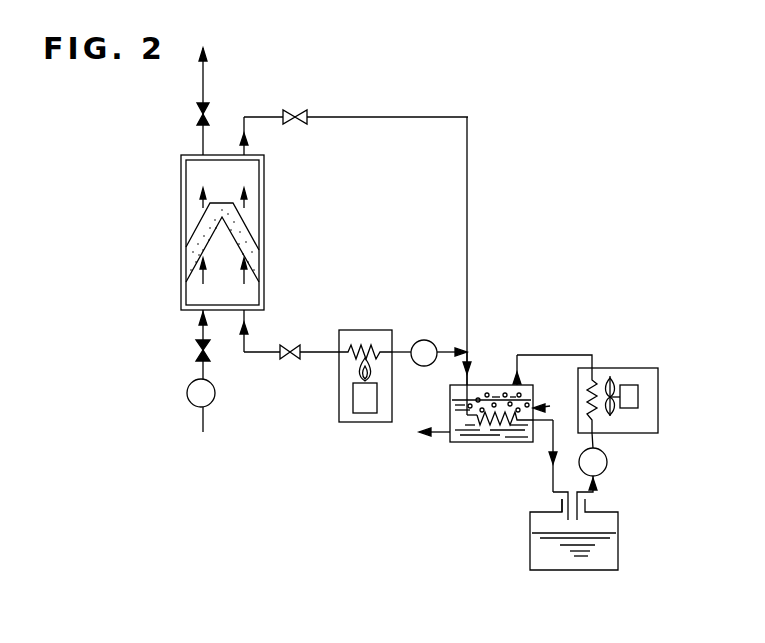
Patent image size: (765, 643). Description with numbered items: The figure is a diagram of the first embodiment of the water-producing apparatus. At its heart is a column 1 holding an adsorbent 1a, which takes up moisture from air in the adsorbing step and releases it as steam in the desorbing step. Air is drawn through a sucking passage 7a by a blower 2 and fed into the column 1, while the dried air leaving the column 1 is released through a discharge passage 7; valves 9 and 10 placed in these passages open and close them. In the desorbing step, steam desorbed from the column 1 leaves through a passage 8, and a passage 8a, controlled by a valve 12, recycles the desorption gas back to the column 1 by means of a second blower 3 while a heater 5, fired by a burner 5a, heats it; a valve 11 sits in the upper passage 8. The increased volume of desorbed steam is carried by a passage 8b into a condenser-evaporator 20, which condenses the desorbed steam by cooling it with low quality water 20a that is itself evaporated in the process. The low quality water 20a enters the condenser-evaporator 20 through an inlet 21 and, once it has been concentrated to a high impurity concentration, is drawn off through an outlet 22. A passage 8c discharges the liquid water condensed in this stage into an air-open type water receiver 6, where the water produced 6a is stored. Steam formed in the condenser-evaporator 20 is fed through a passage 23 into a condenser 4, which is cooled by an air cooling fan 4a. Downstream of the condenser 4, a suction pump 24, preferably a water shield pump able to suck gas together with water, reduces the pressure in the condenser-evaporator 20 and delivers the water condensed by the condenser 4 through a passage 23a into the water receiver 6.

The column 1 is at (264, 193).
The adsorbent 1a is at (259, 243).
The blower 2 is at (215, 393).
The blower 3 is at (420, 340).
The condenser 4 is at (628, 368).
The air cooling fan 4a is at (638, 397).
The heater 5 is at (357, 330).
The burner 5a is at (360, 410).
The water receiver 6 is at (620, 528).
The water produced 6a is at (605, 553).
The discharge passage 7 is at (205, 75).
The sucking passage 7a is at (203, 330).
The passage 8 is at (375, 117).
The passage 8a is at (462, 350).
The passage 8b is at (470, 360).
The passage 8c is at (553, 428).
The valve 9 is at (209, 111).
The valve 10 is at (196, 352).
The valve 11 is at (297, 110).
The valve 12 is at (292, 358).
The condenser-evaporator 20 is at (527, 388).
The low quality water 20a is at (487, 432).
The inlet 21 is at (562, 406).
The outlet 22 is at (437, 435).
The passage 23 is at (553, 355).
The passage 23a is at (596, 486).
The suction pump 24 is at (607, 462).